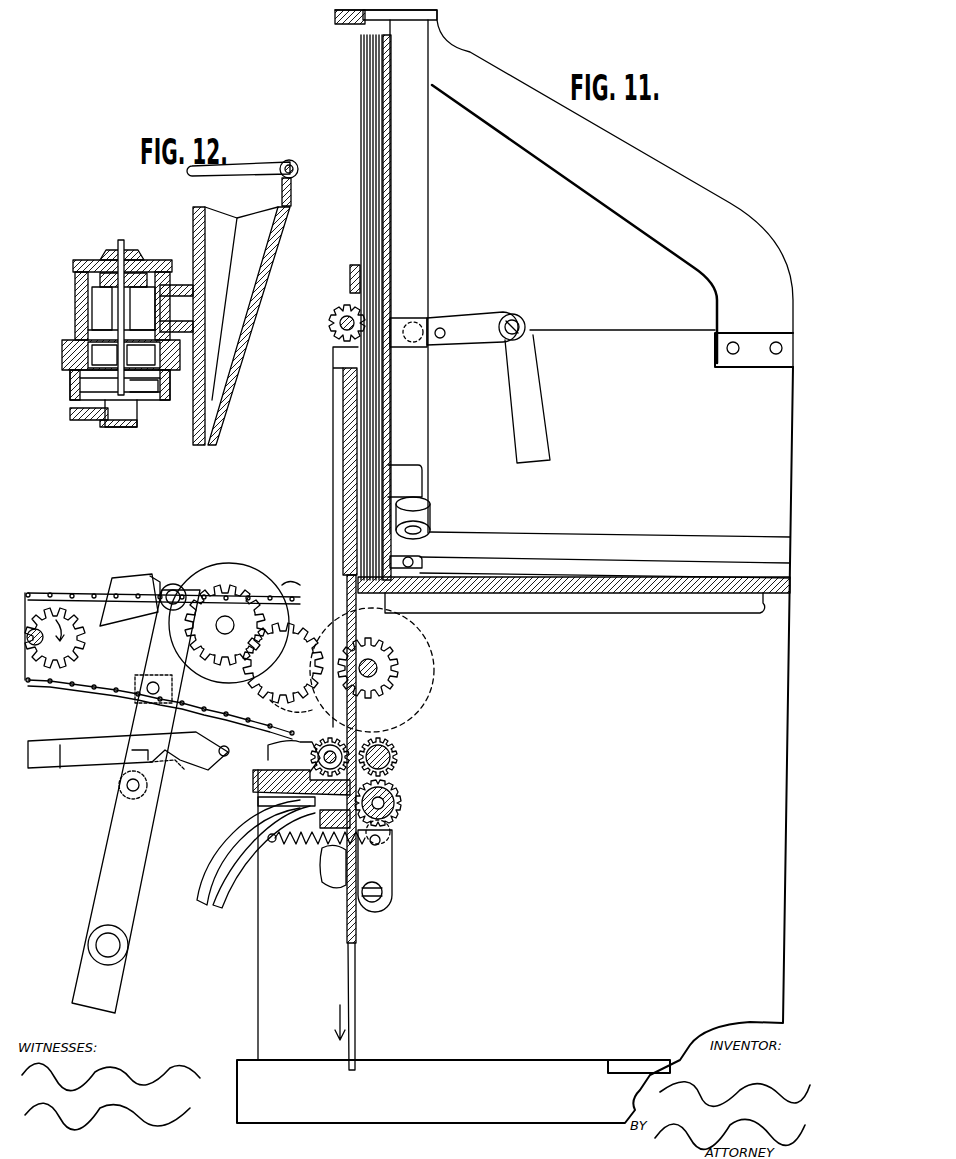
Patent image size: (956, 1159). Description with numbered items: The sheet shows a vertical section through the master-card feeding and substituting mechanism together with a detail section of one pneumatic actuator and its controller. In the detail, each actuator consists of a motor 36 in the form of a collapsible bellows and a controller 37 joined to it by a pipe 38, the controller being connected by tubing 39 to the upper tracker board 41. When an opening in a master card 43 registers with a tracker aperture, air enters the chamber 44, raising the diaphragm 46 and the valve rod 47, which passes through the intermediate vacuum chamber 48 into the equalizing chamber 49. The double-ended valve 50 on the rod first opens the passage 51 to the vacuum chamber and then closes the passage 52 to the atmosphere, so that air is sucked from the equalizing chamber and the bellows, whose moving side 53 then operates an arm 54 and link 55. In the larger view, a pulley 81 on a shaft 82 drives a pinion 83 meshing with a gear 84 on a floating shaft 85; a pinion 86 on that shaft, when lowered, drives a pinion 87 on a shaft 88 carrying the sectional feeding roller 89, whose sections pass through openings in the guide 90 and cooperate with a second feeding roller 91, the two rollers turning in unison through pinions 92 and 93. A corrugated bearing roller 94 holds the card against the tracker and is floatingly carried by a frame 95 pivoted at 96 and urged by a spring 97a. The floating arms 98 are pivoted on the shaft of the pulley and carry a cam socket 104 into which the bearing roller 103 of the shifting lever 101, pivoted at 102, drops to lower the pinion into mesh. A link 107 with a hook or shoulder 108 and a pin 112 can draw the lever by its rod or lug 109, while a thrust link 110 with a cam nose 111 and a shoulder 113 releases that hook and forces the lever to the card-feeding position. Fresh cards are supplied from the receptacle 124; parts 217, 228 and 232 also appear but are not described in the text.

In FIG. 12, the motor 36 is at (193, 215).
In FIG. 12, the controller 37 is at (80, 262).
In FIG. 12, the pipe 38 is at (176, 308).
In FIG. 12, the tubing 39 is at (88, 420).
In FIG. 12, the chamber 44 is at (137, 422).
In FIG. 12, the diaphragm 46 is at (143, 380).
In FIG. 12, the valve rod 47 is at (141, 355).
In FIG. 12, the intermediate vacuum chamber 48 is at (120, 384).
In FIG. 12, the equalizing chamber 49 is at (122, 301).
In FIG. 12, the valve 50 is at (75, 313).
In FIG. 12, the passage 51 is at (121, 355).
In FIG. 12, the passage 52 is at (142, 262).
In FIG. 12, the moving side 53 is at (256, 312).
In FIG. 12, the arm 54 is at (282, 190).
In FIG. 12, the link 55 is at (230, 170).
In FIG. 11, the tracker board 41 is at (320, 820).
In FIG. 11, the perforated cards 43 is at (360, 487).
In FIG. 11, the pulley 81 is at (252, 575).
In FIG. 11, the shaft 82 is at (225, 625).
In FIG. 11, the pinion 83 is at (255, 592).
In FIG. 11, the gear 84 is at (272, 697).
In FIG. 11, the shaft 85 is at (368, 658).
In FIG. 11, the pinion 86 is at (283, 663).
In FIG. 11, the pinion 87 is at (280, 740).
In FIG. 11, the shaft 88 is at (262, 770).
In FIG. 11, the sectional feeding roller 89 is at (317, 757).
In FIG. 11, the guide 90 is at (360, 698).
In FIG. 11, the feeding roller 91 is at (398, 759).
In FIG. 11, the pinion 92 is at (258, 800).
In FIG. 11, the pinion 93 is at (396, 787).
In FIG. 11, the bearing roller 94 is at (400, 812).
In FIG. 11, the frame 95 is at (393, 870).
In FIG. 11, the pivot 96 is at (345, 900).
In FIG. 11, the spring 97a is at (312, 845).
In FIG. 11, the arms 98 is at (116, 578).
In FIG. 11, the shifting lever 101 is at (140, 867).
In FIG. 11, the pivot 102 is at (112, 945).
In FIG. 11, the bearing roller 103 is at (180, 585).
In FIG. 11, the cam socket 104 is at (154, 577).
In FIG. 11, the link 107 is at (55, 742).
In FIG. 11, the hook or shoulder 108 is at (133, 799).
In FIG. 11, the rod or lug 109 is at (148, 700).
In FIG. 11, the thrust link 110 is at (60, 768).
In FIG. 11, the cam nose 111 is at (178, 762).
In FIG. 11, the pin 112 is at (222, 758).
In FIG. 11, the shoulder 113 is at (135, 752).
In FIG. 11, the receptacle 124 is at (515, 566).
In FIG. 11, the chain lower run 217 is at (90, 696).
In FIG. 11, the hub 228 is at (45, 624).
In FIG. 11, the sprocket 232 is at (78, 638).